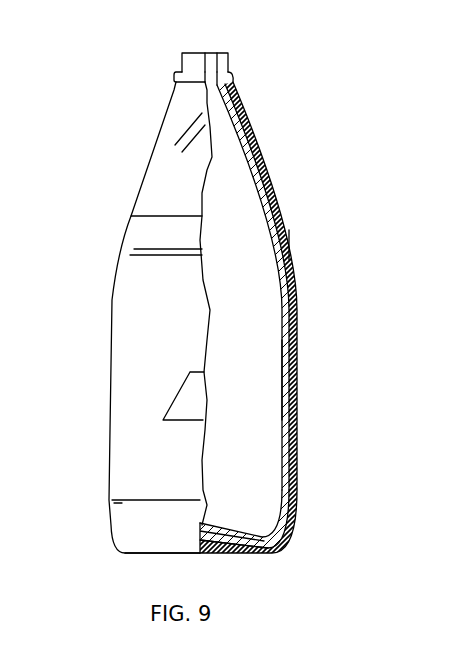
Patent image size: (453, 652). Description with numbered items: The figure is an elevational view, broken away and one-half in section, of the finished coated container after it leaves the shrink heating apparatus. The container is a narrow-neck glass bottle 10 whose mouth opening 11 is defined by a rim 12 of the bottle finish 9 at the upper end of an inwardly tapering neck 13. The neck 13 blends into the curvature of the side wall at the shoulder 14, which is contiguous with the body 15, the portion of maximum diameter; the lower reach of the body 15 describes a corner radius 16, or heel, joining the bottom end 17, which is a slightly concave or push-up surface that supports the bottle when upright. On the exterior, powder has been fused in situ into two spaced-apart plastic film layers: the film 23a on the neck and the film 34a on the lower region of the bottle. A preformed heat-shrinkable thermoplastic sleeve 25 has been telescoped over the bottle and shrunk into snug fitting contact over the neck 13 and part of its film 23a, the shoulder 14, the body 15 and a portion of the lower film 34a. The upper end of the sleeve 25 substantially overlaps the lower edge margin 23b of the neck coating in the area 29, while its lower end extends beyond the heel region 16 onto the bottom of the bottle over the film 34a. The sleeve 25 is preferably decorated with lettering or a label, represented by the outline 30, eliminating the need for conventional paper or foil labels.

The bottle finish 9 is at (234, 66).
The glass bottle 10 is at (245, 238).
The mouth opening 11 is at (213, 73).
The rim 12 is at (230, 53).
The neck 13 is at (253, 194).
The shoulder 14 is at (279, 283).
The body 15 is at (283, 367).
The corner radius 16 is at (268, 537).
The bottom end 17 is at (222, 522).
The plastic film layer 23a is at (197, 195).
The lower edge margin 23b is at (290, 251).
The sleeve 25 is at (158, 349).
The overlap area 29 is at (135, 240).
The outline 30 is at (178, 427).
The plastic film layer 34a is at (281, 500).